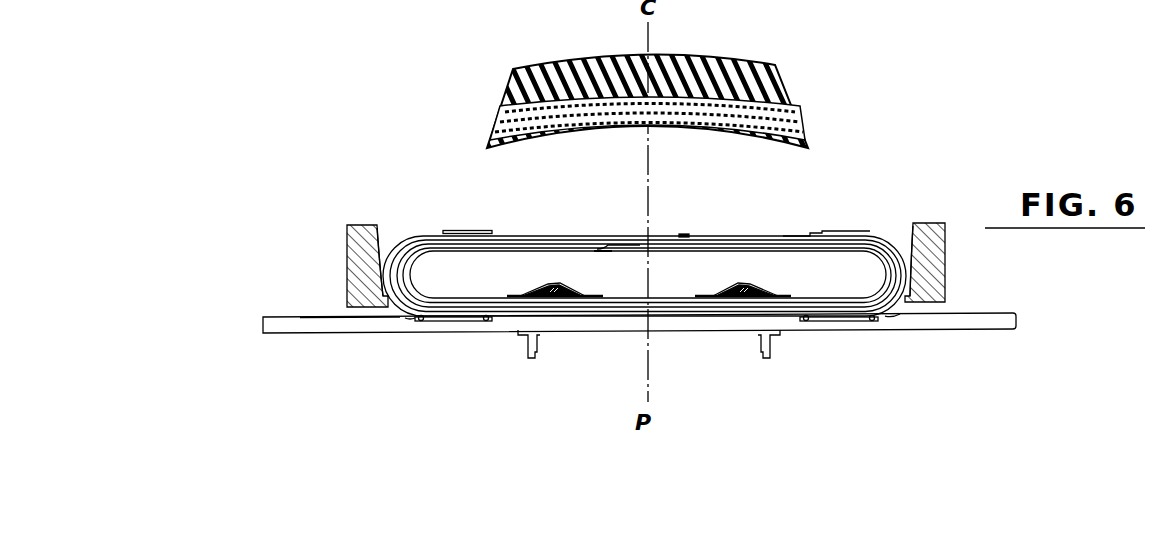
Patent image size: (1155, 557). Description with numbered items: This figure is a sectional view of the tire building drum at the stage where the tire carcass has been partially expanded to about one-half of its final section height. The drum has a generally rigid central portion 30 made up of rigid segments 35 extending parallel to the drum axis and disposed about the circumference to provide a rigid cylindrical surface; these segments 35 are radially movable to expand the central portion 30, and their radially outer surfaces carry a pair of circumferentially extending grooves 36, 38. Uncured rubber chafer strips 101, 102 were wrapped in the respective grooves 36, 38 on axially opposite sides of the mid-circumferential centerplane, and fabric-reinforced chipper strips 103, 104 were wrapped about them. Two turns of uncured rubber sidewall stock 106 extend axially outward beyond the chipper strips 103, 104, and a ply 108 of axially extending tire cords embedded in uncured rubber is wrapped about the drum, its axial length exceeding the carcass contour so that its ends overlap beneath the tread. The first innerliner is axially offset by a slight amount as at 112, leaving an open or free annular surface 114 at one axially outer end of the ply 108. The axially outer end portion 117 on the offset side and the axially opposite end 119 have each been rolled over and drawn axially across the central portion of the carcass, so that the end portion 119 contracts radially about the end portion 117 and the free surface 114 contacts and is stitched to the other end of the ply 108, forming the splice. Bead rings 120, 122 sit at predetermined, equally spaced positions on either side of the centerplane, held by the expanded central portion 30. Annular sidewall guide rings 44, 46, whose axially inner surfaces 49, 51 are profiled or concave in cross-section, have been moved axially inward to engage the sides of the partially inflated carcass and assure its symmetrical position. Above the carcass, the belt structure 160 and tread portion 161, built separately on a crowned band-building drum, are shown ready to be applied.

The central portion 30 is at (297, 317).
The rigid segments 35 is at (343, 327).
The groove 36 is at (410, 318).
The groove 38 is at (897, 316).
The sidewall guide ring 44 is at (347, 228).
The sidewall guide ring 46 is at (927, 223).
The axially inner surface 49 is at (381, 237).
The axially inner surface 51 is at (913, 242).
The chafer strip 101 is at (488, 320).
The chafer strip 102 is at (810, 320).
The chipper strip 103 is at (457, 319).
The chipper strip 104 is at (857, 319).
The sidewall stock 106 is at (460, 232).
The ply 108 is at (783, 237).
The axial offset 112 is at (597, 250).
The free annular surface 114 is at (667, 237).
The axially outer end portion 117 is at (627, 242).
The axially opposite end 119 is at (684, 235).
The bead ring 120 is at (557, 298).
The bead ring 122 is at (745, 294).
The belt structure 160 is at (518, 112).
The tread portion 161 is at (778, 67).